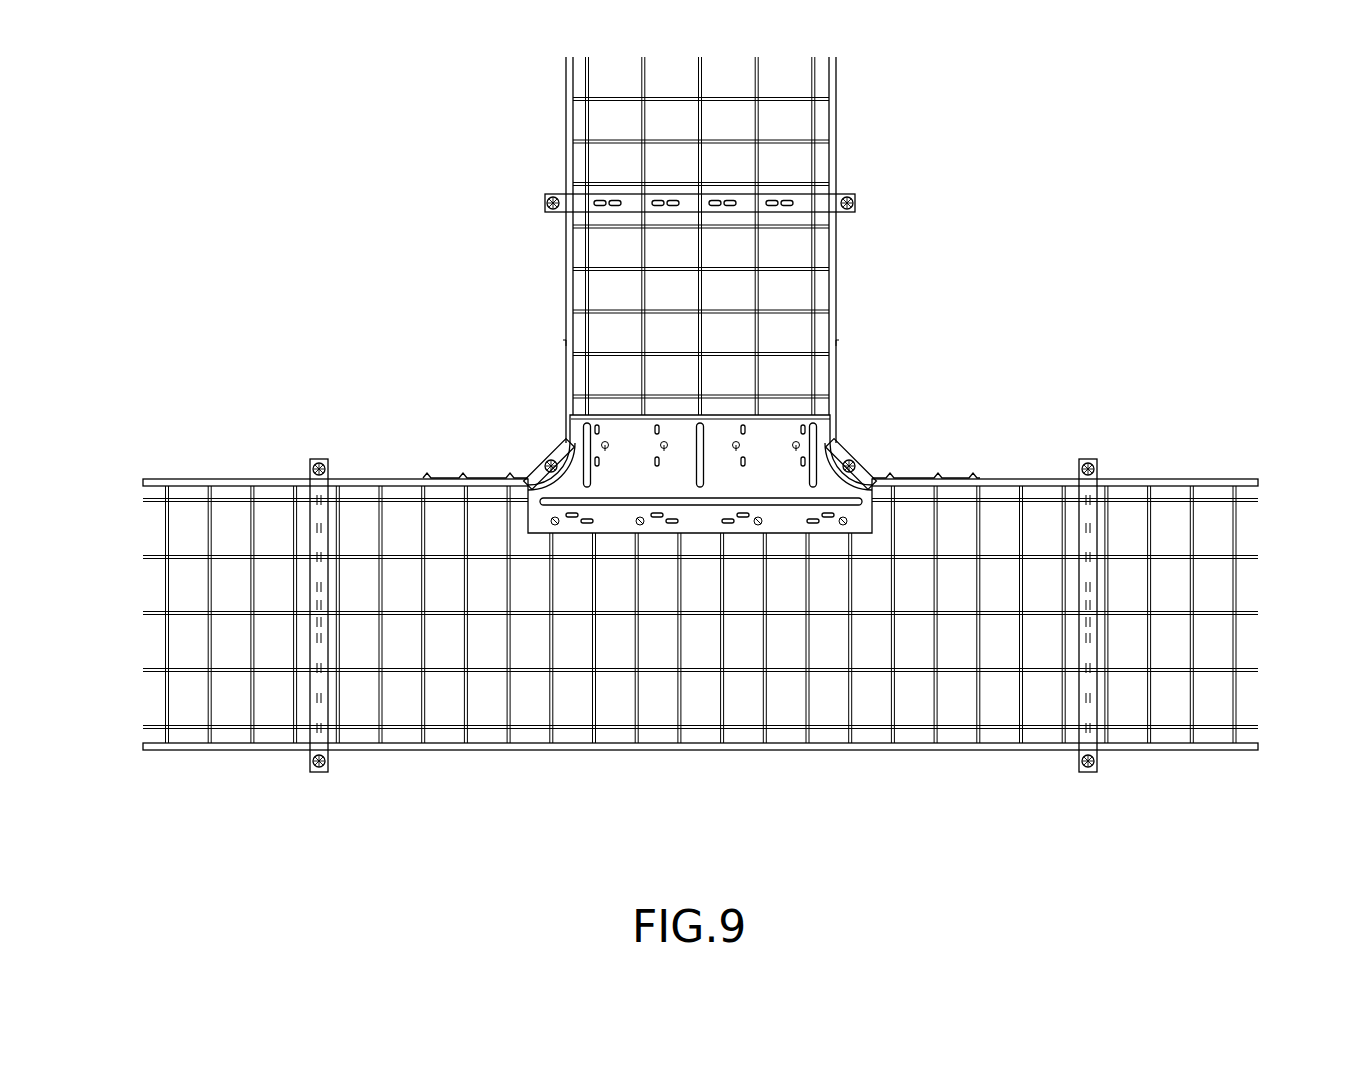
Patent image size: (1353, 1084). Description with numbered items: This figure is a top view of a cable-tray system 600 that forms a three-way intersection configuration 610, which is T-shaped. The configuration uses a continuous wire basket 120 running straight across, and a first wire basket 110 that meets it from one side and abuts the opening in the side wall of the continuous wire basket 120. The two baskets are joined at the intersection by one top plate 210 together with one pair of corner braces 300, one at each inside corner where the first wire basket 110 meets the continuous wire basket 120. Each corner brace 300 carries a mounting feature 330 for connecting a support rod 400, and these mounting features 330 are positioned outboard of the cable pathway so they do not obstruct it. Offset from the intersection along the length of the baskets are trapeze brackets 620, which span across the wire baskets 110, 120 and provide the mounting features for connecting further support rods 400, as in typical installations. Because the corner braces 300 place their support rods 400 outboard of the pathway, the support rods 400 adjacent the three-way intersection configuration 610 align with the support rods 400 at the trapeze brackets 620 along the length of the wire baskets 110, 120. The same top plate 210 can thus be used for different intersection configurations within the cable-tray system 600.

The first wire basket 110 is at (836, 80).
The continuous wire basket 120 is at (700, 607).
The top plate 210 is at (615, 487).
The corner brace 300 is at (564, 442).
The mounting feature 330 is at (549, 458).
The support rod 400 is at (551, 212).
The cable-tray system 600 is at (968, 373).
The three-way intersection configuration 610 is at (485, 527).
The trapeze bracket 620 is at (798, 202).